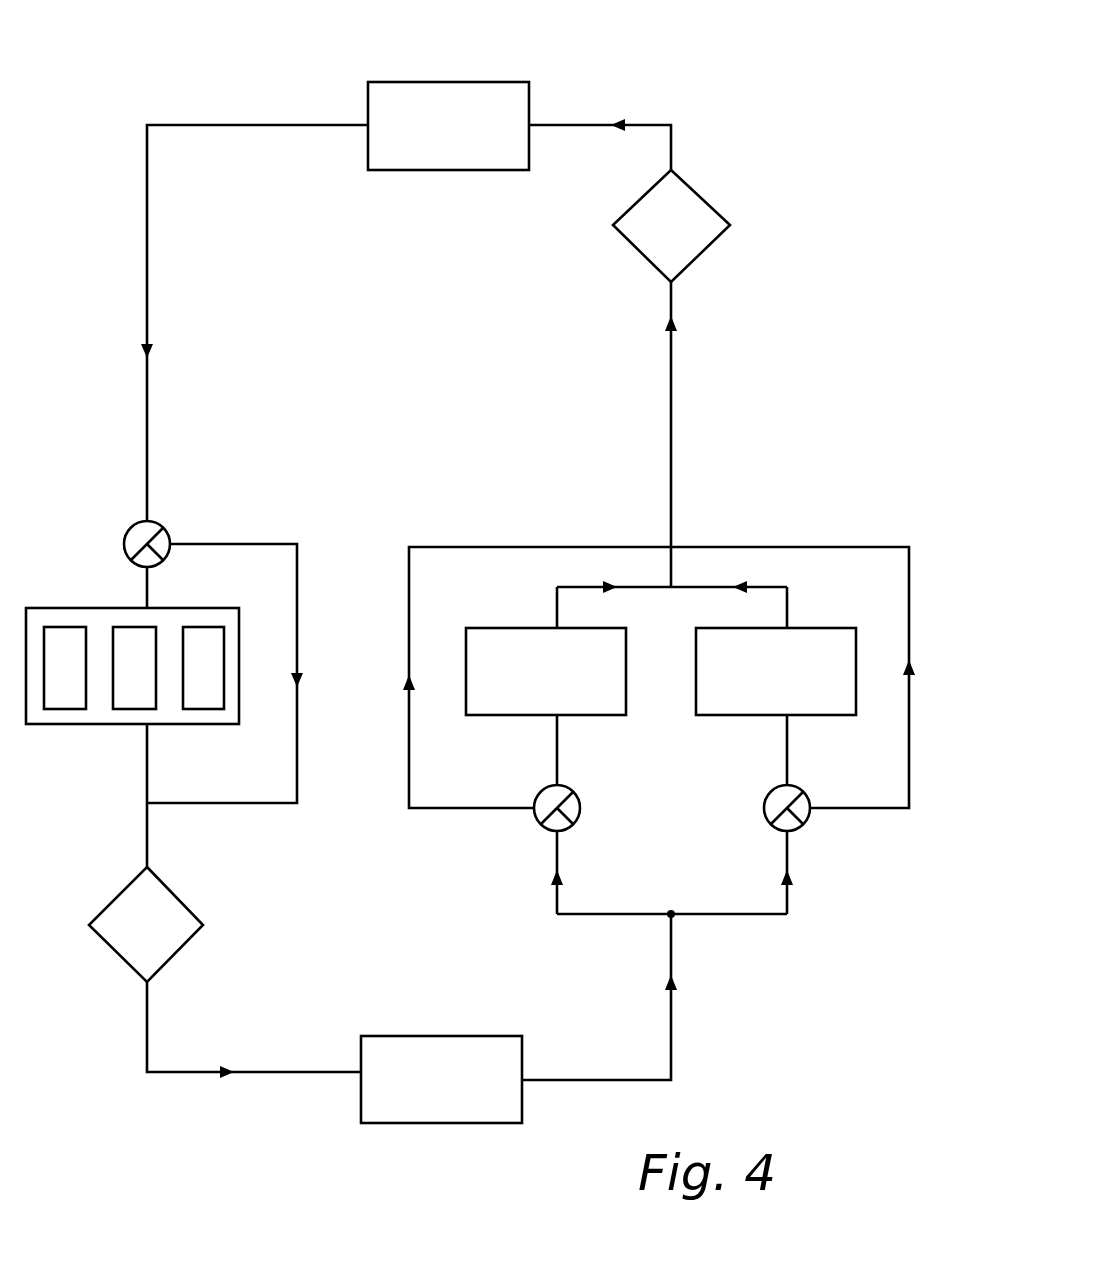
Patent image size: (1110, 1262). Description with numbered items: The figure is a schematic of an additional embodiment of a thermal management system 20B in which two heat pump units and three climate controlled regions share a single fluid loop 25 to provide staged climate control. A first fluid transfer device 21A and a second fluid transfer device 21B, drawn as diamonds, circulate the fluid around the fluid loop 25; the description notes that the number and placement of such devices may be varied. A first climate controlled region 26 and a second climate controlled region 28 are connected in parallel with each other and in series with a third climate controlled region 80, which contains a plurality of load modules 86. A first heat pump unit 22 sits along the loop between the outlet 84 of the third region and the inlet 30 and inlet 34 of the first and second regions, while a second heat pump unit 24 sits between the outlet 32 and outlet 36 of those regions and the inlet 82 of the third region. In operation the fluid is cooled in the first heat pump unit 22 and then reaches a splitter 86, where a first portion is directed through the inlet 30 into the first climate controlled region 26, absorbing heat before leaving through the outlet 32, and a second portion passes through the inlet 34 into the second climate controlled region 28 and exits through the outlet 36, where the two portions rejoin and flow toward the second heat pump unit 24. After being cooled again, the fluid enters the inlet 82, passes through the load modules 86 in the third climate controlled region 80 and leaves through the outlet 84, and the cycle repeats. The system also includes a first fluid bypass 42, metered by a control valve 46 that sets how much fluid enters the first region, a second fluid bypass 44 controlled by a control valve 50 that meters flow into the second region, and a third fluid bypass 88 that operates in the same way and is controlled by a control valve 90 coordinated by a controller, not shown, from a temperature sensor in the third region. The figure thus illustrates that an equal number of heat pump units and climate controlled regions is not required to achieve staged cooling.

The thermal management system 20B is at (701, 99).
The second heat pump unit 24 is at (448, 126).
The second fluid transfer device 21B is at (671, 226).
The fluid loop 25 is at (684, 435).
The control valve 90 is at (123, 530).
The third fluid bypass 88 is at (234, 531).
The inlet 82 is at (149, 607).
The third climate controlled region 80 is at (94, 607).
The load modules 86 is at (183, 709).
The outlet 84 is at (147, 725).
The first fluid transfer device 21A is at (146, 924).
The first heat pump unit 22 is at (441, 1079).
The first fluid bypass 42 is at (480, 818).
The second fluid bypass 44 is at (838, 818).
The outlet 32 is at (556, 627).
The outlet 36 is at (788, 624).
The first climate controlled region 26 is at (546, 671).
The second climate controlled region 28 is at (776, 671).
The inlet 30 is at (558, 719).
The inlet 34 is at (786, 718).
The control valve 46 is at (582, 807).
The control valve 50 is at (764, 808).